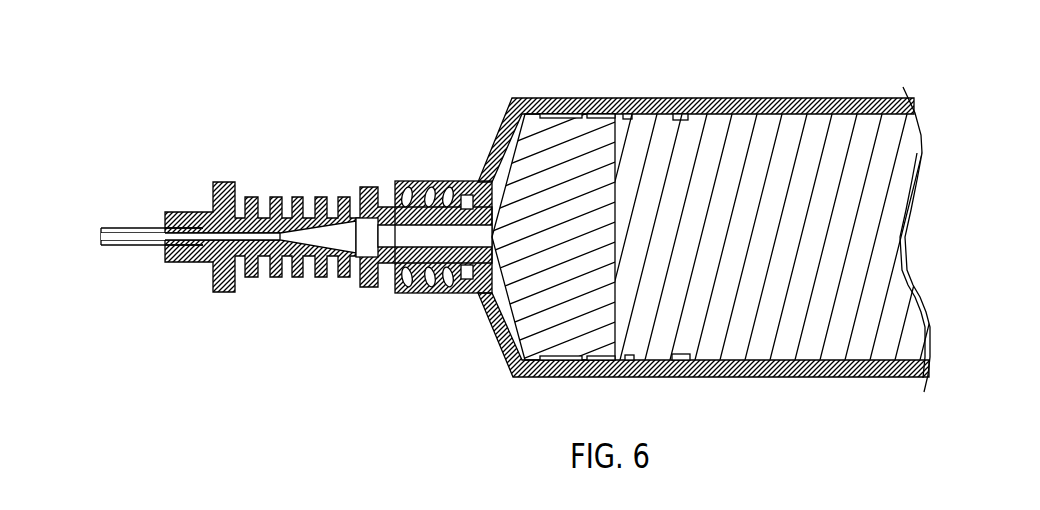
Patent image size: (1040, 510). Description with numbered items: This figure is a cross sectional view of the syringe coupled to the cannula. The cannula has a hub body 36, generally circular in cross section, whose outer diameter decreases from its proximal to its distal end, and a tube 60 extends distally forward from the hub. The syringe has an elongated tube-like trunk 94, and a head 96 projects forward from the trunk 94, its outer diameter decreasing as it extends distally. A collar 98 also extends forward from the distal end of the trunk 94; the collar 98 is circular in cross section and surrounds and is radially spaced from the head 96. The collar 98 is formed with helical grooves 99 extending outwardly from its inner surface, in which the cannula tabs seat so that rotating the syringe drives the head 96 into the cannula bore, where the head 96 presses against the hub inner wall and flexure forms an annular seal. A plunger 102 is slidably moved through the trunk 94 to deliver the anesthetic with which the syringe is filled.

The hub body 36 is at (285, 218).
The tube 60 is at (133, 246).
The trunk 94 is at (820, 99).
The head 96 is at (441, 181).
The collar 98 is at (407, 181).
The grooves 99 is at (455, 268).
The plunger 102 is at (917, 178).